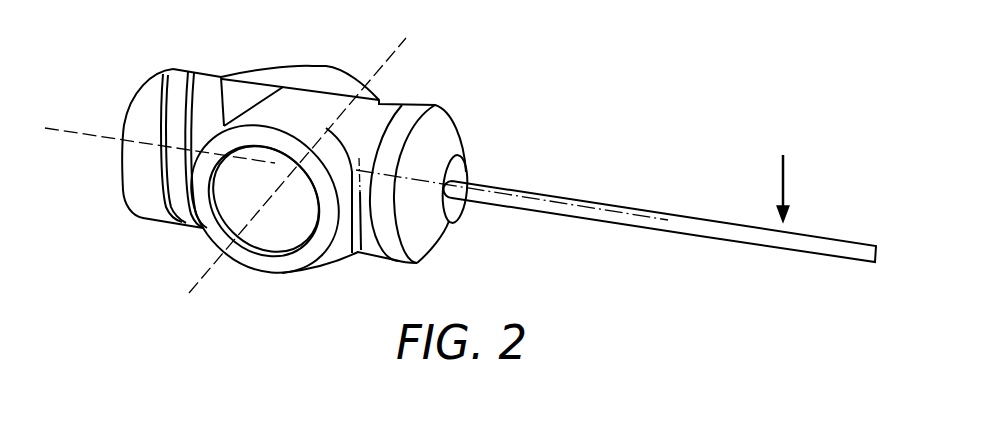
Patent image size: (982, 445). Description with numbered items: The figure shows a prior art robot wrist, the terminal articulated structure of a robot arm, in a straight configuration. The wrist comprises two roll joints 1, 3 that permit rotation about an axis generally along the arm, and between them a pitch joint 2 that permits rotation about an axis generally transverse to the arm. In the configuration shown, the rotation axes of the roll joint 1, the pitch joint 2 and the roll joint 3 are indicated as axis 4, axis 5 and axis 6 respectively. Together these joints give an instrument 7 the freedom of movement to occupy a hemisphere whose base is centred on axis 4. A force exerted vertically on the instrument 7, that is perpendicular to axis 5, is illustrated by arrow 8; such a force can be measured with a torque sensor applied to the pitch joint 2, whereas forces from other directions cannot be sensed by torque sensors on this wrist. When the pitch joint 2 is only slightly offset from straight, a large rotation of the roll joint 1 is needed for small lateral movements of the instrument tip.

The roll joint 1 is at (220, 73).
The pitch joint 2 is at (321, 64).
The roll joint 3 is at (419, 102).
The axis 4 is at (71, 133).
The axis 5 is at (191, 294).
The axis 6 is at (521, 192).
The instrument 7 is at (835, 238).
The arrow 8 is at (781, 168).